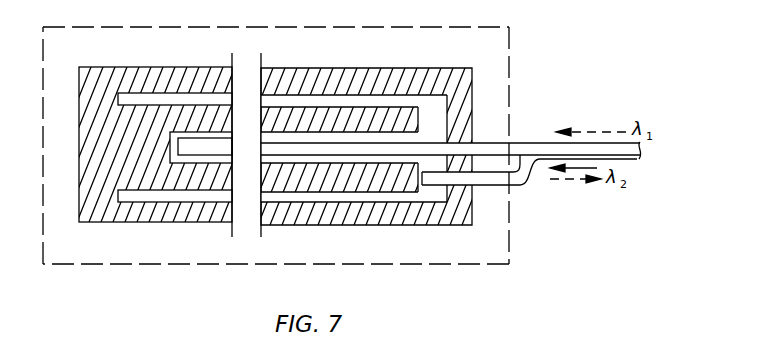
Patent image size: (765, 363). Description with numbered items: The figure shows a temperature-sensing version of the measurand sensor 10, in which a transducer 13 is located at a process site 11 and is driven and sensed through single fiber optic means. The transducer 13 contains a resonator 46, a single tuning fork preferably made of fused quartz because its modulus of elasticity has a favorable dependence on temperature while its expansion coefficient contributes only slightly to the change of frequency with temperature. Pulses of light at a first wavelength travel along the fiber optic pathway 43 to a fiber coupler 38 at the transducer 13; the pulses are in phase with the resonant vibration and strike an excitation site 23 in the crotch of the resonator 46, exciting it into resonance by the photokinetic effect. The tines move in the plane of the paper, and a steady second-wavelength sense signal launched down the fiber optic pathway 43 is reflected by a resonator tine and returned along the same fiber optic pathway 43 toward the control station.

The measurand sensor 10 is at (212, 273).
The process site 11 is at (489, 311).
The transducer 13 is at (392, 265).
The excitation site 23 is at (178, 138).
The resonator 46 is at (147, 153).
The fiber coupler 38 is at (526, 143).
The fiber optic pathway 43 is at (640, 158).